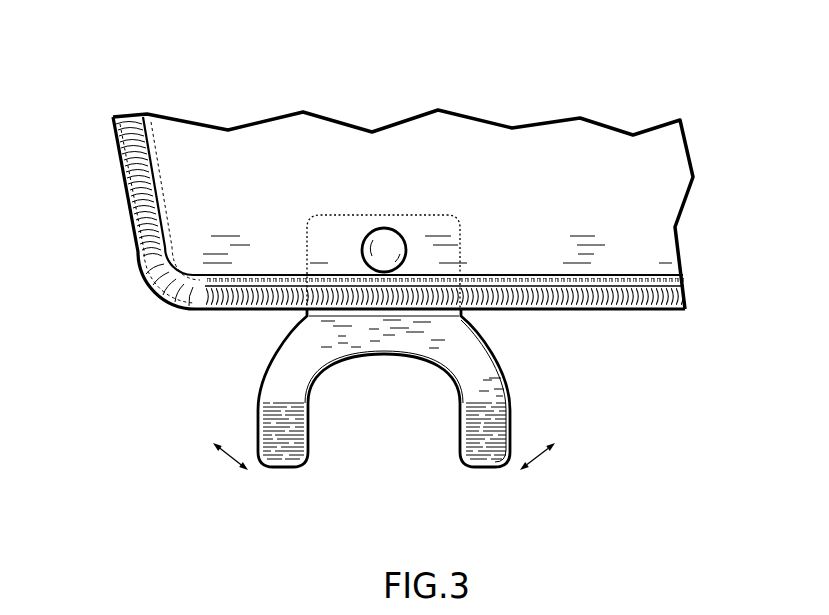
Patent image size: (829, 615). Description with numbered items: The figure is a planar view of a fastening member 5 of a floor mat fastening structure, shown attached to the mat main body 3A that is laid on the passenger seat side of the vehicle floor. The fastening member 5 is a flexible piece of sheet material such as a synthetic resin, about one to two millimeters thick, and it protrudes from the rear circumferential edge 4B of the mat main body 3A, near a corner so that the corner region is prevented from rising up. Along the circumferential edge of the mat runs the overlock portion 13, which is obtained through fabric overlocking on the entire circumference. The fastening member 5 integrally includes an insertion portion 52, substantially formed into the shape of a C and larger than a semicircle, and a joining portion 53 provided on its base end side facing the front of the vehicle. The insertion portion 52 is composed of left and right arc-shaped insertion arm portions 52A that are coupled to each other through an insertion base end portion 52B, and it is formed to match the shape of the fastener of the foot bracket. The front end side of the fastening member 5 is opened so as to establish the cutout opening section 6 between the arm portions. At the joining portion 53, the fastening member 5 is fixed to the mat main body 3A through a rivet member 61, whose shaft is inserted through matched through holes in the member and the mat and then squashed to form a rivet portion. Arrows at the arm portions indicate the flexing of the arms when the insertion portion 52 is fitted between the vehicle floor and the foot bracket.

The mat main body 3A is at (542, 148).
The overlock portion 13 is at (145, 223).
The rear circumferential edge 4B is at (600, 310).
The joining portion 53 is at (330, 217).
The rivet member 61 is at (372, 230).
The fastening member 5 is at (257, 415).
The insertion arm portion 52A is at (270, 382).
The insertion portion 52 is at (480, 443).
The insertion base end portion 52B is at (380, 340).
The cutout opening section 6 is at (392, 420).